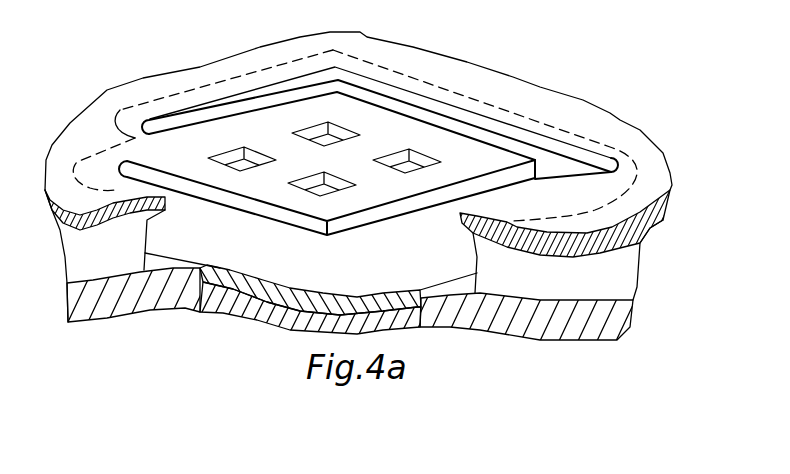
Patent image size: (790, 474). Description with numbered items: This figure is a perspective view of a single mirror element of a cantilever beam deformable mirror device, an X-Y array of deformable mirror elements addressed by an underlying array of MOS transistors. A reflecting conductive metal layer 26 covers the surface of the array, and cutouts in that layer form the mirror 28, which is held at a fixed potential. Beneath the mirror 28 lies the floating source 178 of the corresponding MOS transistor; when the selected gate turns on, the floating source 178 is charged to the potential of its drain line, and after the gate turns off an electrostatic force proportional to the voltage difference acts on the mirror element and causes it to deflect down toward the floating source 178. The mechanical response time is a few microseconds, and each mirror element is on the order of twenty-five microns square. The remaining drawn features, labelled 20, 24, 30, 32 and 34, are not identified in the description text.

The electronic package assembly 20 is at (577, 14).
The support posts 24 is at (118, 259).
The reflecting conductive metal layer 26 is at (667, 173).
The mirror 28 is at (402, 118).
The apertures 30 is at (327, 135).
The raised rim 32 is at (208, 117).
The hidden edge of bonding layer 34 is at (138, 126).
The floating source 178 is at (380, 277).